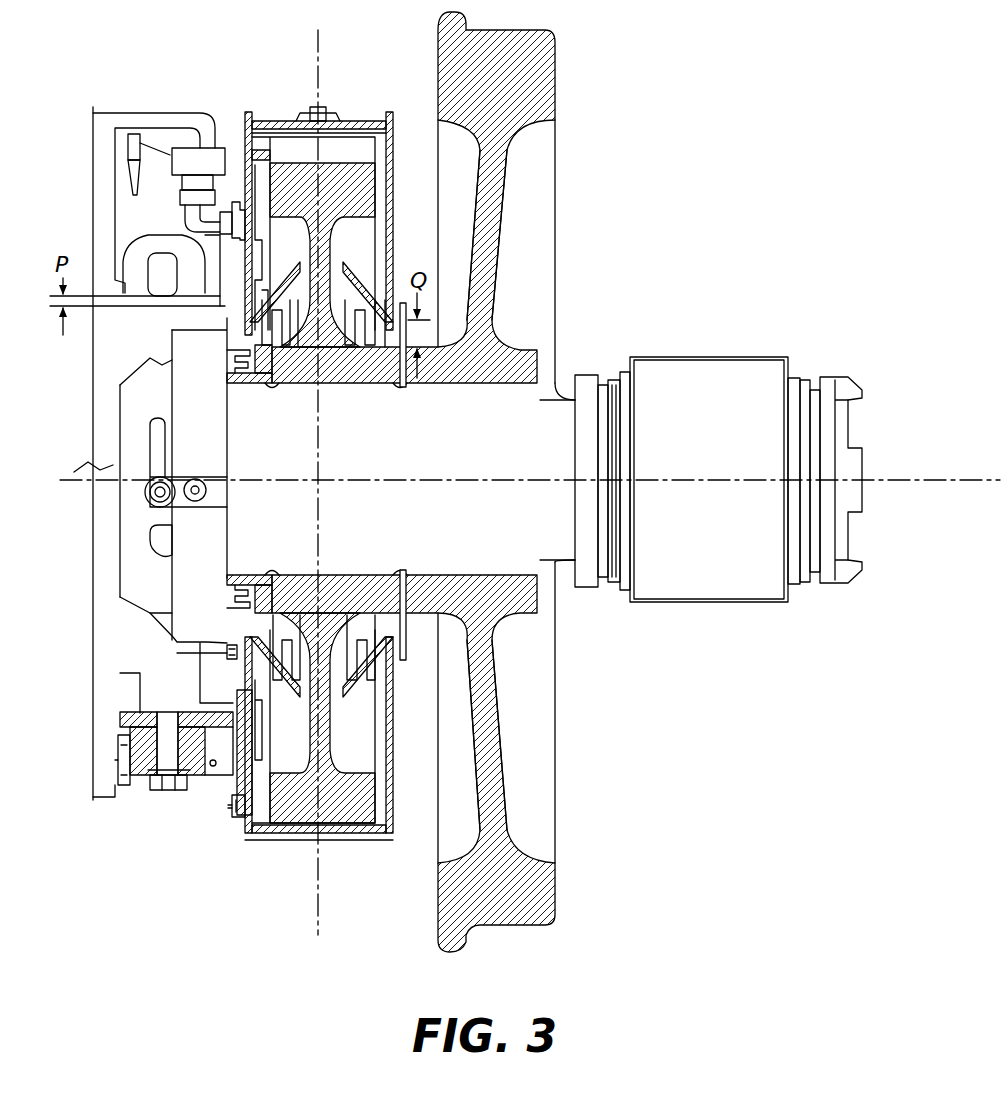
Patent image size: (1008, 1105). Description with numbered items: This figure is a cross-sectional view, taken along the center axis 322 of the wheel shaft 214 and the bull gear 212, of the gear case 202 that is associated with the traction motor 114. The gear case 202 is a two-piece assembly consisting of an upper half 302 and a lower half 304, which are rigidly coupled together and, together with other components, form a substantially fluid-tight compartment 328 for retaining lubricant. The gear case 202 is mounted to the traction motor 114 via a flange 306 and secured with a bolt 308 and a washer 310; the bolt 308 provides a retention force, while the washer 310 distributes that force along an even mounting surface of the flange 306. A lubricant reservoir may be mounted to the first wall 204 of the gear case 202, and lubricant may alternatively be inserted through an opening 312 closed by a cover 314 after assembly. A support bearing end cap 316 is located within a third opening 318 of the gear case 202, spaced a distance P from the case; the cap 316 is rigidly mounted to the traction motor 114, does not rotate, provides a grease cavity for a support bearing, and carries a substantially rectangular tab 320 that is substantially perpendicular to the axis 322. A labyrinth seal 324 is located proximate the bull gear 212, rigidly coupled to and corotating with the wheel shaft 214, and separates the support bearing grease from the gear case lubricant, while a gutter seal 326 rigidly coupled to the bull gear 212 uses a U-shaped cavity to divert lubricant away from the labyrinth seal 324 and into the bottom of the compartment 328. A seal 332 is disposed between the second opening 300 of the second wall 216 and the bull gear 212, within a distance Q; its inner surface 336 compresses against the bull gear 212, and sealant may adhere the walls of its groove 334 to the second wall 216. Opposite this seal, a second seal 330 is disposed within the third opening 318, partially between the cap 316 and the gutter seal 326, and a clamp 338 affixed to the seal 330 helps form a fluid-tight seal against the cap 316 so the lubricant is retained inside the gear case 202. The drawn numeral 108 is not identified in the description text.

The rotor 108 is at (527, 82).
The traction motor 114 is at (120, 91).
The gear case 202 is at (248, 113).
The first wall 204 is at (225, 810).
The bull gear 212 is at (300, 820).
The wheel shaft 214 is at (537, 410).
The second wall 216 is at (420, 173).
The second opening 300 is at (430, 540).
The upper half 302 is at (398, 147).
The lower half 304 is at (402, 826).
The flange 306 is at (122, 720).
The bolt 308 is at (165, 797).
The washer 310 is at (140, 793).
The opening 312 is at (337, 115).
The cover 314 is at (304, 106).
The support bearing end cap 316 is at (227, 650).
The third opening 318 is at (263, 405).
The tab 320 is at (247, 330).
The center axis 322 is at (78, 483).
The labyrinth seal 324 is at (230, 580).
The gutter seal 326 is at (227, 613).
The compartment 328 is at (370, 760).
The second seal 330 is at (243, 287).
The seal 332 is at (350, 263).
The groove 334 is at (392, 640).
The inner surface 336 is at (388, 612).
The clamp 338 is at (237, 647).